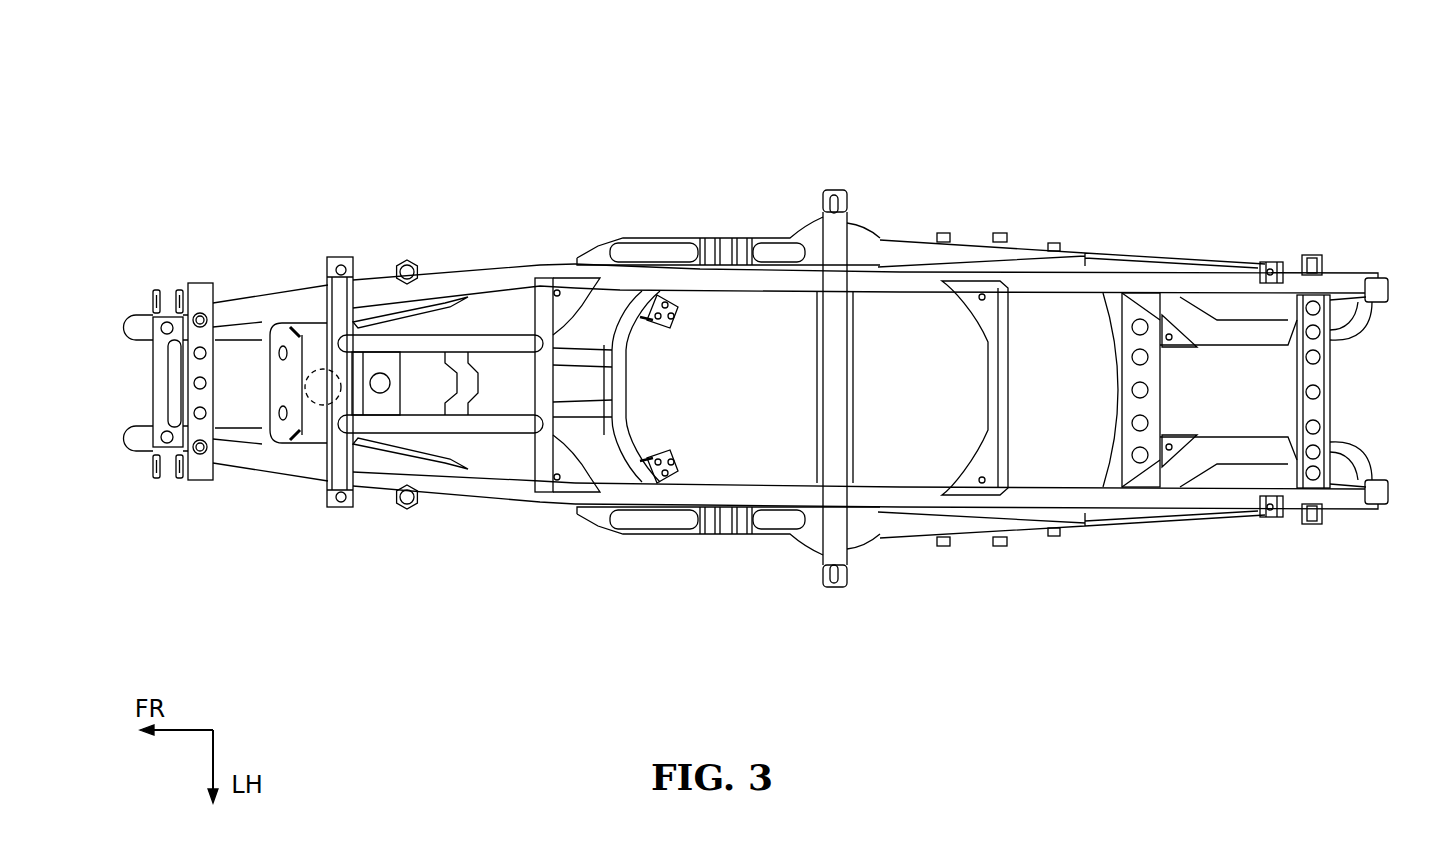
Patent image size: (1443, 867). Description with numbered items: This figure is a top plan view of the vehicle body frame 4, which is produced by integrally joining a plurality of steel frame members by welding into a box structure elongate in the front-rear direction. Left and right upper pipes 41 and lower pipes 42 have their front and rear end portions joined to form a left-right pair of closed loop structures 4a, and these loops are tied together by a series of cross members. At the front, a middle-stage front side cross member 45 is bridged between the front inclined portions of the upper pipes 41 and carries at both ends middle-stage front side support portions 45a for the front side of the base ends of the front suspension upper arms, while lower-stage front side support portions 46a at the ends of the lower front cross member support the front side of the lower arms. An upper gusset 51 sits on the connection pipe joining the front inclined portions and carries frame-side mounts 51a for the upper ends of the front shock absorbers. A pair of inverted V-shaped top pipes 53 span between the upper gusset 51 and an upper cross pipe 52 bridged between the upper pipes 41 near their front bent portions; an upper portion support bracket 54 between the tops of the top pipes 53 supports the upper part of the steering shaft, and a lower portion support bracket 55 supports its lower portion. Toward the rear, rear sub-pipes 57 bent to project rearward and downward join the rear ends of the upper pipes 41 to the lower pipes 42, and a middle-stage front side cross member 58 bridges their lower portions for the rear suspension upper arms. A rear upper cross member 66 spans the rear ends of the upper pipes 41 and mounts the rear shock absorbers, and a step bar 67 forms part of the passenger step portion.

The vehicle body frame 4 is at (876, 98).
The closed loop structure 4a is at (918, 210).
The upper pipe 41 is at (492, 252).
The lower pipe 42 is at (660, 228).
The middle-stage front side cross member 45 is at (218, 400).
The middle-stage front side support portion 45a is at (185, 300).
The lower-stage front side support portion 46a is at (155, 290).
The upper gusset 51 is at (366, 434).
The frame-side mount 51a is at (330, 258).
The upper cross pipe 52 is at (536, 444).
The top pipe 53 is at (517, 345).
The upper portion support bracket 54 is at (462, 340).
The lower portion support bracket 55 is at (267, 302).
The rear sub-pipe 57 is at (1357, 330).
The middle-stage front side cross member 58 is at (1163, 398).
The rear upper cross member 66 is at (1320, 408).
The step bar 67 is at (822, 200).